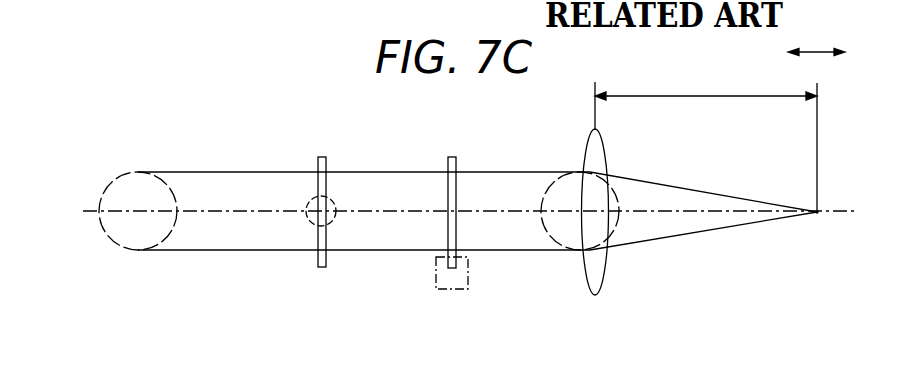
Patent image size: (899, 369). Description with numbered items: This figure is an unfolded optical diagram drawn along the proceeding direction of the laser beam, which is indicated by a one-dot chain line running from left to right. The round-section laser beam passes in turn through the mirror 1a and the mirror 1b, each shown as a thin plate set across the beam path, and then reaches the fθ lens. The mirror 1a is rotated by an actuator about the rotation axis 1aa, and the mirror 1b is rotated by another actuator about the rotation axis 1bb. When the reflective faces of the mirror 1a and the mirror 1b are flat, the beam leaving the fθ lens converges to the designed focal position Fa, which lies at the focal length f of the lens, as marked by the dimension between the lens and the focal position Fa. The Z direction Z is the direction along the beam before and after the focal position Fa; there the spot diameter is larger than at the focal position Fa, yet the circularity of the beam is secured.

The mirror 1a is at (322, 157).
The rotation axis of actuator 1aa is at (313, 225).
The mirror 1b is at (452, 157).
The rotation axis of actuator 1bb is at (460, 291).
The focal length f is at (706, 143).
The focal position Fa is at (818, 212).
The Z direction Z is at (816, 43).